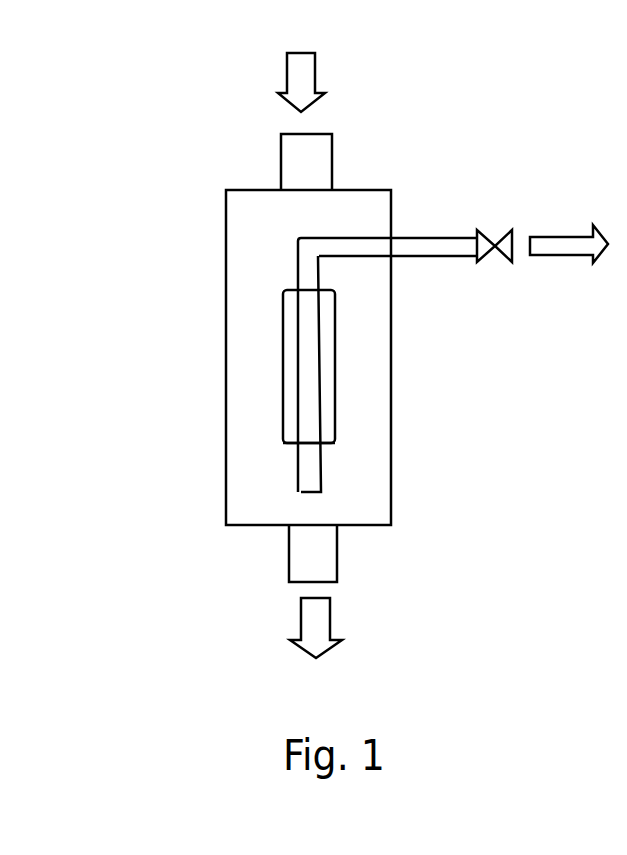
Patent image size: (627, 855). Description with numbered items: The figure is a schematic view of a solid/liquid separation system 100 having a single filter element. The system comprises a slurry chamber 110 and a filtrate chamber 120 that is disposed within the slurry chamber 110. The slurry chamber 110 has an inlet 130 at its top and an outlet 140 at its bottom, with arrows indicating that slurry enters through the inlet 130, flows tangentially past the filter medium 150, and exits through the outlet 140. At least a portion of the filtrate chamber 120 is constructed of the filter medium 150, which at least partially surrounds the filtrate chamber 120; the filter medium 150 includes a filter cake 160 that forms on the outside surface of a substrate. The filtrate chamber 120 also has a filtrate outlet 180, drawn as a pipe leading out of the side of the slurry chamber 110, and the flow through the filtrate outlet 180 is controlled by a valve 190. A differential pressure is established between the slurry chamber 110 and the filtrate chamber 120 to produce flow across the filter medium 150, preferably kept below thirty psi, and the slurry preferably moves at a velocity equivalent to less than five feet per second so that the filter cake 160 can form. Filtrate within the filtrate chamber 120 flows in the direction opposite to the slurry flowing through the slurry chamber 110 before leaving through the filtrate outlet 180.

The solid/liquid separation system 100 is at (388, 139).
The slurry chamber 110 is at (252, 196).
The filtrate chamber 120 is at (307, 331).
The inlet 130 is at (318, 150).
The outlet 140 is at (327, 567).
The filter medium 150 is at (320, 415).
The filter cake 160 is at (335, 382).
The filtrate outlet 180 is at (402, 243).
The valve 190 is at (505, 230).